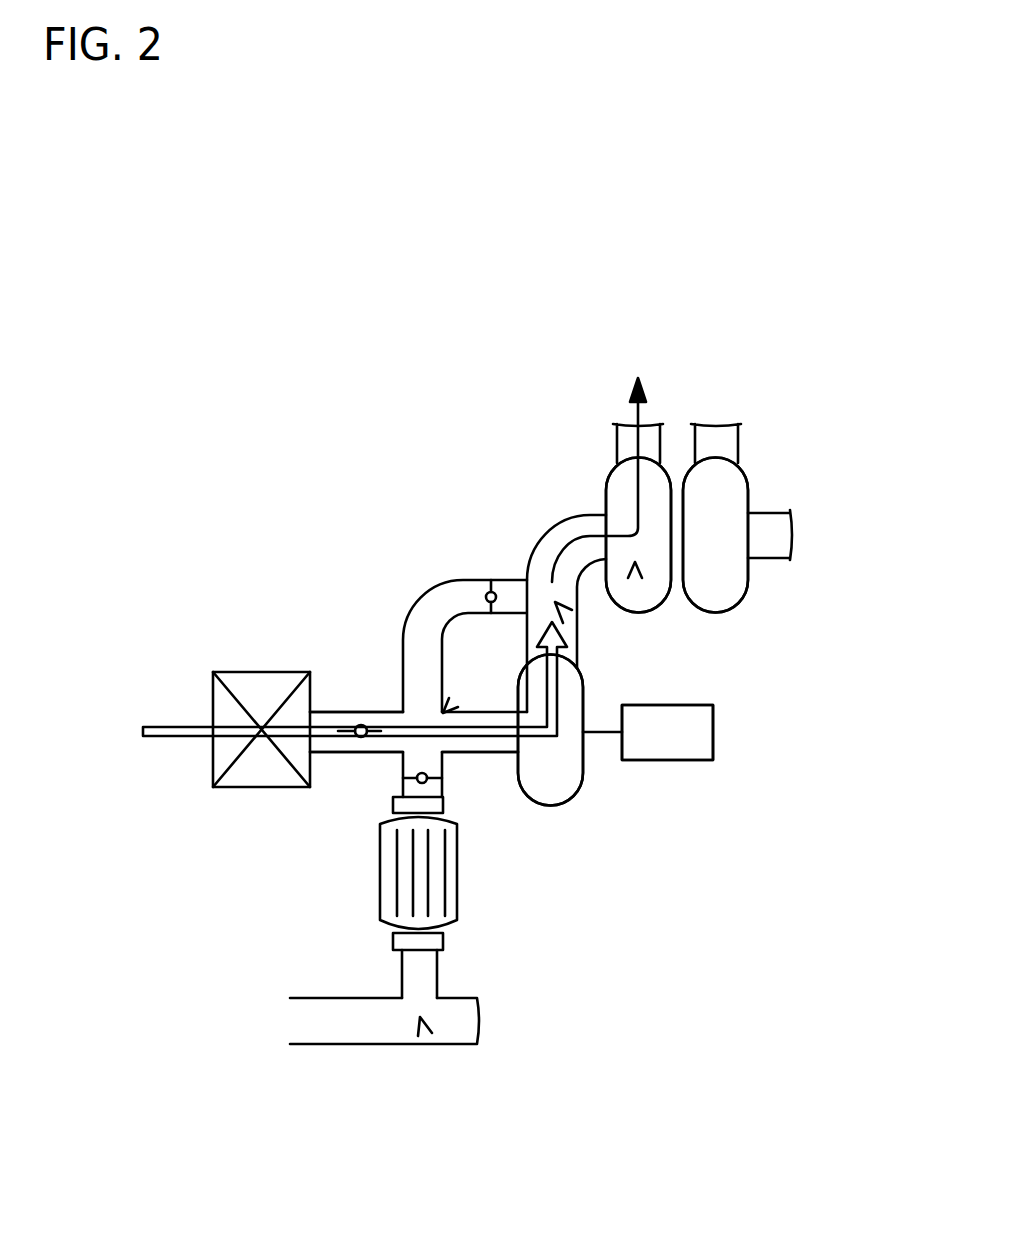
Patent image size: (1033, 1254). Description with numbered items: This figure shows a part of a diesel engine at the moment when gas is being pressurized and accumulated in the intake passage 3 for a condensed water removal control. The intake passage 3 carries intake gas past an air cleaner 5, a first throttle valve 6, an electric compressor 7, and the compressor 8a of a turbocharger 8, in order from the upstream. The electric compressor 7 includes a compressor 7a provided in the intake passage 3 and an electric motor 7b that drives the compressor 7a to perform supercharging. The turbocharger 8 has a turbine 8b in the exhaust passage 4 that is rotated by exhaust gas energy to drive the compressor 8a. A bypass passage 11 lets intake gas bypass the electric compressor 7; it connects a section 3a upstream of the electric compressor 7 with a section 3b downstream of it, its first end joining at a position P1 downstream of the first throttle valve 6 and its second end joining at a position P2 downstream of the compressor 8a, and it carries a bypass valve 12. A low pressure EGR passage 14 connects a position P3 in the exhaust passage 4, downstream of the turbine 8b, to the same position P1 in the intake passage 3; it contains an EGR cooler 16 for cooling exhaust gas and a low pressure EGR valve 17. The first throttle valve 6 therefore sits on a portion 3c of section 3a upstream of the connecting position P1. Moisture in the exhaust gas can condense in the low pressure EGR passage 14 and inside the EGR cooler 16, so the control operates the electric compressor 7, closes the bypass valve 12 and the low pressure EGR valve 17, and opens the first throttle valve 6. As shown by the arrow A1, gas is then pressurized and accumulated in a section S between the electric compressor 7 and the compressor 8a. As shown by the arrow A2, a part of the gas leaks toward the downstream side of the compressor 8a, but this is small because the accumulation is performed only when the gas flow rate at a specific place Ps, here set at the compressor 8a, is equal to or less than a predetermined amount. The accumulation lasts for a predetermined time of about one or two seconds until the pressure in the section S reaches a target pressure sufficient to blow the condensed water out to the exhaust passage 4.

The intake passage 3 is at (377, 710).
The first section of the intake passage 3a is at (493, 757).
The second section of the intake passage 3b is at (568, 514).
The portion of the intake passage 3c is at (331, 710).
The exhaust passage 4 is at (768, 560).
The air cleaner 5 is at (233, 787).
The first throttle valve 6 is at (363, 747).
The electric compressor 7 is at (660, 788).
The compressor 7a is at (577, 800).
The electric motor 7b is at (713, 747).
The turbocharger 8 is at (750, 452).
The compressor of the turbocharger 8a is at (606, 470).
The turbine 8b is at (710, 613).
The bypass passage 11 is at (405, 625).
The bypass valve 12 is at (486, 590).
The low pressure EGR passage 14 is at (438, 977).
The EGR cooler 16 is at (457, 895).
The low pressure EGR valve 17 is at (430, 782).
The arrow A1 is at (405, 768).
The arrow A2 is at (658, 440).
The position P1 is at (444, 712).
The position P2 is at (555, 602).
The position P3 is at (420, 1017).
The specific place Ps is at (635, 562).
The section S is at (538, 541).